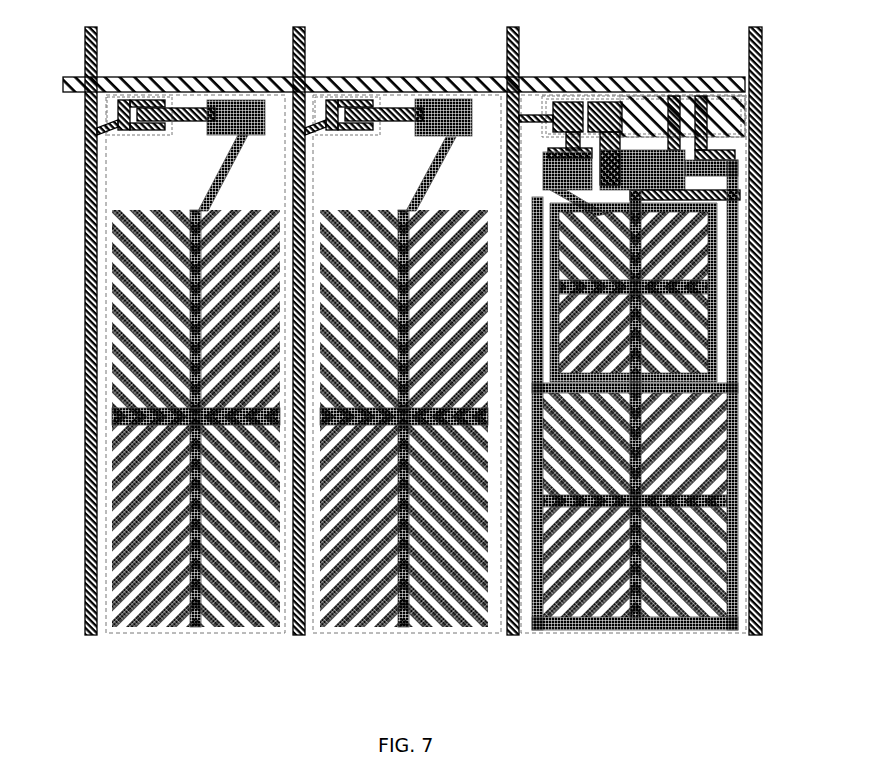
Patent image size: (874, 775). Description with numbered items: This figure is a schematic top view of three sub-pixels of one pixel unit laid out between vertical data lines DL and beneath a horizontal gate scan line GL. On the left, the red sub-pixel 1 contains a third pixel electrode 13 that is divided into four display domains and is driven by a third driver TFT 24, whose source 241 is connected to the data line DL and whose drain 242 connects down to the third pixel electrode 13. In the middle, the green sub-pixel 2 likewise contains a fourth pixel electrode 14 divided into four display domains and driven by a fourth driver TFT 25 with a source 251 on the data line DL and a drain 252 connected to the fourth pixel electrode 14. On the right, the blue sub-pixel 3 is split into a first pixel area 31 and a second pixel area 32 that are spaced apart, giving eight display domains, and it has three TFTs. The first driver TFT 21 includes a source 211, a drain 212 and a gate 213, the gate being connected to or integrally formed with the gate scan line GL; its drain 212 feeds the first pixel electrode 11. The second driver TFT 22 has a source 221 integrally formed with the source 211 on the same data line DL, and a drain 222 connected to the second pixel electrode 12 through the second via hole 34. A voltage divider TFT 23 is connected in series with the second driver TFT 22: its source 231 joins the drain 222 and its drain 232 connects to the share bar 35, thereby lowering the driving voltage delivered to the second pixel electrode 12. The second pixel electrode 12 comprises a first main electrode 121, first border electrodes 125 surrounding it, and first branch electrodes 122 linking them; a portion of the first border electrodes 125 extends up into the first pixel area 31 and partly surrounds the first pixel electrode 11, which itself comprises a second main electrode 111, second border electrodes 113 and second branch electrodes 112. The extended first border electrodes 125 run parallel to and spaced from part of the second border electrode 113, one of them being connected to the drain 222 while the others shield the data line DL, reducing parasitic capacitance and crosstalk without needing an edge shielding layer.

The gate scan line GL is at (85, 88).
The data line DL is at (85, 182).
The red sub-pixel 1 is at (191, 343).
The third pixel electrode 13 is at (228, 612).
The third driver TFT 24 is at (181, 75).
The source of the third driver TFT 241 is at (123, 104).
The drain of the third driver TFT 242 is at (140, 48).
The green sub-pixel 2 is at (403, 343).
The fourth pixel electrode 14 is at (438, 612).
The fourth driver TFT 25 is at (388, 76).
The source of the fourth driver TFT 251 is at (331, 104).
The drain of the fourth driver TFT 252 is at (350, 48).
The blue sub-pixel 3 is at (605, 633).
The first driver TFT 21 is at (570, 100).
The source of the first driver TFT 211 is at (567, 108).
The drain of the first driver TFT 212 is at (603, 108).
The second driver TFT 22 is at (664, 83).
The source of the second driver TFT 221 is at (700, 118).
The drain of the second driver TFT 222 is at (672, 118).
The gate of the first driver TFT 213 is at (716, 106).
The voltage divider TFT 23 is at (697, 114).
The source of the voltage divider TFT 231 is at (740, 133).
The drain of the voltage divider TFT 232 is at (740, 107).
The second via hole 34 is at (738, 166).
The share bar 35 is at (742, 195).
The second border electrodes 113 is at (738, 218).
The second branch electrodes 112 is at (718, 243).
The second main electrode 111 is at (705, 287).
The first pixel electrode 11 is at (685, 286).
The first pixel area 31 is at (762, 362).
The first border electrodes 125 is at (738, 388).
The first main electrode 121 is at (738, 501).
The first branch electrodes 122 is at (720, 560).
The second pixel electrode 12 is at (687, 415).
The second pixel area 32 is at (662, 632).